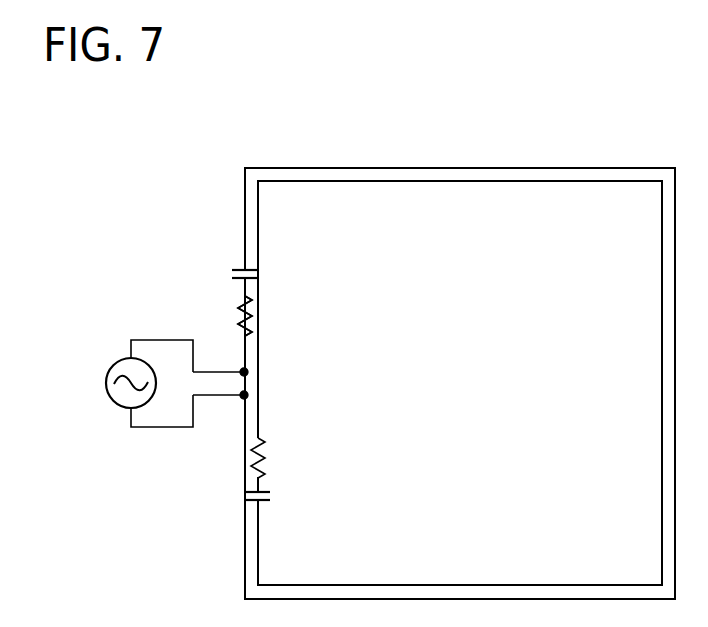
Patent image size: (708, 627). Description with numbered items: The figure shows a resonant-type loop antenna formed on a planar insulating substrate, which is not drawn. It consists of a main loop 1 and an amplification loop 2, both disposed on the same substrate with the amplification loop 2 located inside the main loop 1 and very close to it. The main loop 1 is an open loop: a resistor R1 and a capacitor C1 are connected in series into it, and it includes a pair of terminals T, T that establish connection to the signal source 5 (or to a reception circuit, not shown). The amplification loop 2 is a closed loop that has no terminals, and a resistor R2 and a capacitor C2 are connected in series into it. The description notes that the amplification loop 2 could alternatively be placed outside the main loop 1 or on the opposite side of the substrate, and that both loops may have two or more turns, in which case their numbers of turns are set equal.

The main loop 1 is at (431, 167).
The amplification loop 2 is at (427, 183).
The signal source 5 is at (106, 383).
The capacitor C1 is at (231, 275).
The resistor R1 is at (228, 316).
The resistor R2 is at (274, 458).
The capacitor C2 is at (272, 501).
The terminals T is at (220, 383).